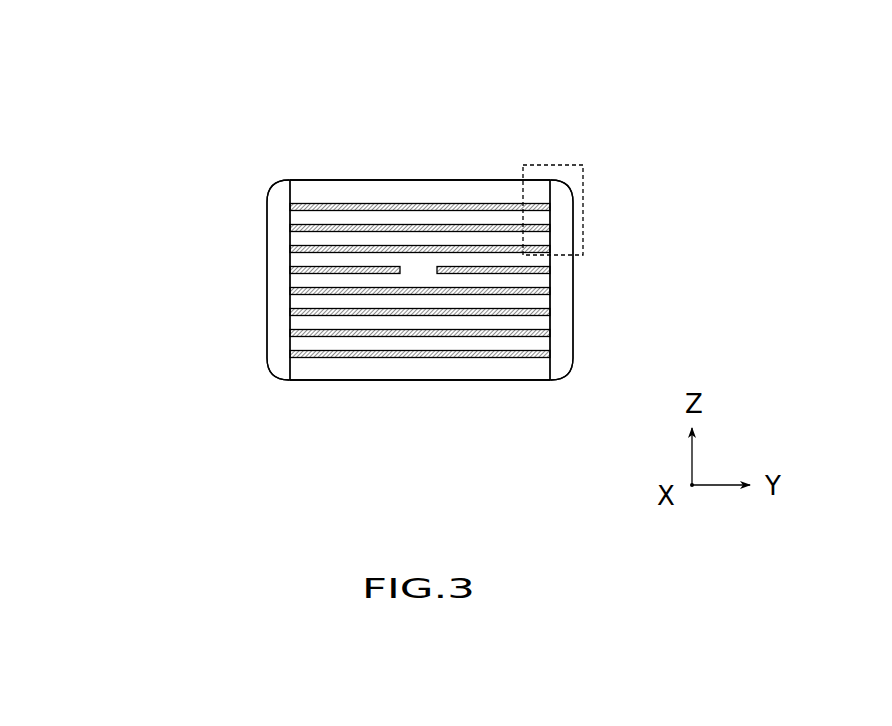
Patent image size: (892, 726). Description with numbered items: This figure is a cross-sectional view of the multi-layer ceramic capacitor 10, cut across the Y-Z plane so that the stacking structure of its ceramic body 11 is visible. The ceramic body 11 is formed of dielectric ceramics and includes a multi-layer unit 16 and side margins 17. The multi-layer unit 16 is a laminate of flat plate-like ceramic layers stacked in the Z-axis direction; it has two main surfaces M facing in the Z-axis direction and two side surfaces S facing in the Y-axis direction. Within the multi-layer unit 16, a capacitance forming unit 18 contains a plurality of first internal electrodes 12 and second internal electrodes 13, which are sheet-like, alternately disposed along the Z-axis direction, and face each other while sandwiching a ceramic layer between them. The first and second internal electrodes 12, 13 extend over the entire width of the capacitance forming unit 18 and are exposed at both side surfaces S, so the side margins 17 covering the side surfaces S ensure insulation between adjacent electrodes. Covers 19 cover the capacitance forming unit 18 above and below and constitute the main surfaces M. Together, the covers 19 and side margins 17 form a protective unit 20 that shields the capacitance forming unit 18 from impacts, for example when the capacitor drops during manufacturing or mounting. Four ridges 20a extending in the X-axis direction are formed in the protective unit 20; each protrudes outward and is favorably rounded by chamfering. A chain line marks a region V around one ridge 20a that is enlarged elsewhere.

The multi-layer ceramic capacitor 10 is at (207, 80).
The ceramic body 11 is at (573, 115).
The first internal electrode 12 is at (310, 335).
The second internal electrode 13 is at (458, 353).
The multi-layer unit 16 is at (425, 148).
The side margin 17 is at (265, 238).
The capacitance forming unit 18 is at (420, 263).
The cover 19 is at (325, 178).
The protective unit 20 is at (190, 163).
The ridge 20a is at (262, 175).
The main surface M is at (397, 178).
The side surface S is at (290, 278).
The region V is at (585, 210).